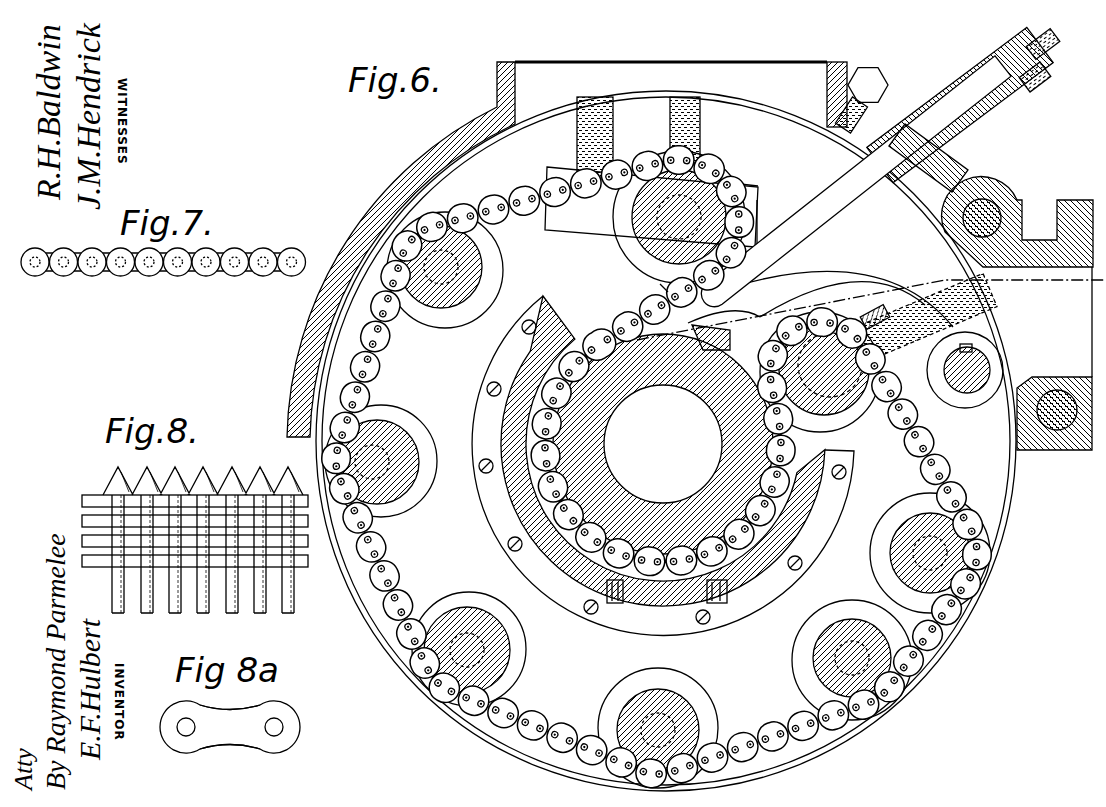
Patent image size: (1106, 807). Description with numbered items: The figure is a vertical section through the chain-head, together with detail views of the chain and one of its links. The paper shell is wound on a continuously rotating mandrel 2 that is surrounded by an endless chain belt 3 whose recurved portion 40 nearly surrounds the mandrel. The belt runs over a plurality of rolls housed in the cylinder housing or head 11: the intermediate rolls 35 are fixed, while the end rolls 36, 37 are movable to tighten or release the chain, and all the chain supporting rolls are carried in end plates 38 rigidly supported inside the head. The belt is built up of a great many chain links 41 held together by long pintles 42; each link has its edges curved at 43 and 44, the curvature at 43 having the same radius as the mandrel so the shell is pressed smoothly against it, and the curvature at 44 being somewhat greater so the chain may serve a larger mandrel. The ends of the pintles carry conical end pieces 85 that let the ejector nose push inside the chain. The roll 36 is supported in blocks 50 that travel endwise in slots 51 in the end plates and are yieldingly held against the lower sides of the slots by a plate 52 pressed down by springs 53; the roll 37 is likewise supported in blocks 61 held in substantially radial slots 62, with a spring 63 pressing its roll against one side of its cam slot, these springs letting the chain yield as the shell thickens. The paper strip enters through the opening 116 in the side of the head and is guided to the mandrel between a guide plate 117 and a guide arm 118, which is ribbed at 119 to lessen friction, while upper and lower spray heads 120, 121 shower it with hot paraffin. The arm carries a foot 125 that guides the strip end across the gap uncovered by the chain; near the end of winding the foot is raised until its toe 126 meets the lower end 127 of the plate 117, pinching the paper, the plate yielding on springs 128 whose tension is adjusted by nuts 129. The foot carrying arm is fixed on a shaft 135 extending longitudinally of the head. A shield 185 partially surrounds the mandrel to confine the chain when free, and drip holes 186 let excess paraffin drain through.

In FIG. 6, the mandrel 2 is at (643, 513).
In FIG. 6, the chain belt 3 is at (656, 467).
In FIG. 7, the chain belt 3 is at (163, 276).
In FIG. 8, the chain belt 3 is at (203, 547).
In FIG. 6, the cylinder housing or head 11 is at (438, 152).
In FIG. 6, the intermediate rolls 35 is at (470, 269).
In FIG. 6, the end roll 36 is at (638, 252).
In FIG. 6, the end roll 37 is at (870, 417).
In FIG. 6, the end plates 38 is at (666, 441).
In FIG. 6, the recurved portion 40 is at (547, 490).
In FIG. 6, the chain links 41 is at (656, 467).
In FIG. 8, the chain links 41 is at (300, 567).
In FIG. 8A, the chain links 41 is at (230, 727).
In FIG. 6, the pintles 42 is at (365, 342).
In FIG. 7, the pintles 42 is at (194, 272).
In FIG. 8, the pintles 42 is at (220, 608).
In FIG. 8A, the curved edge 43 is at (237, 744).
In FIG. 8A, the curved edge 44 is at (230, 712).
In FIG. 6, the blocks 50 is at (748, 165).
In FIG. 6, the slots 51 is at (757, 212).
In FIG. 6, the plate 52 is at (748, 192).
In FIG. 6, the springs 53 is at (610, 145).
In FIG. 6, the blocks 61 is at (822, 418).
In FIG. 6, the radial slots 62 is at (876, 312).
In FIG. 6, the spring 63 is at (930, 297).
In FIG. 7, the conical end pieces 85 is at (163, 276).
In FIG. 8, the conical end pieces 85 is at (177, 483).
In FIG. 6, the opening 116 is at (1055, 288).
In FIG. 6, the guide plate 117 is at (855, 205).
In FIG. 6, the guide arm 118 is at (830, 283).
In FIG. 6, the ribs 119 is at (860, 281).
In FIG. 6, the upper spray head 120 is at (985, 200).
In FIG. 6, the lower spray head 121 is at (1057, 430).
In FIG. 6, the foot 125 is at (729, 335).
In FIG. 6, the toe 126 is at (692, 320).
In FIG. 6, the lower end 127 is at (660, 287).
In FIG. 6, the springs 128 is at (940, 95).
In FIG. 6, the nuts 129 is at (1047, 82).
In FIG. 6, the shaft 135 is at (980, 395).
In FIG. 6, the shield 185 is at (547, 563).
In FIG. 6, the drip holes 186 is at (627, 597).